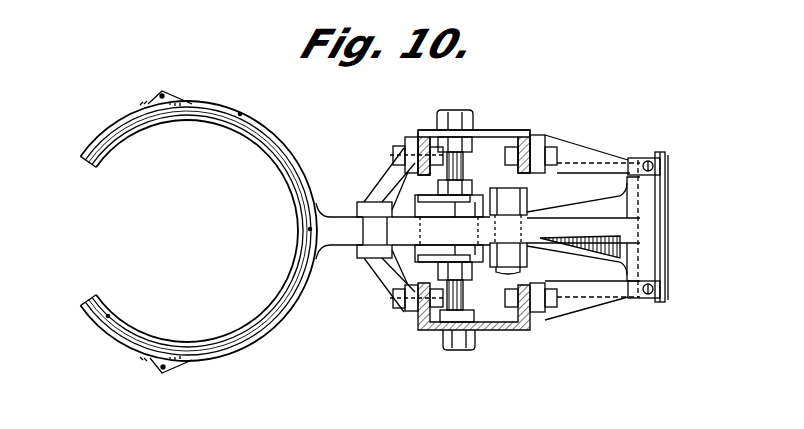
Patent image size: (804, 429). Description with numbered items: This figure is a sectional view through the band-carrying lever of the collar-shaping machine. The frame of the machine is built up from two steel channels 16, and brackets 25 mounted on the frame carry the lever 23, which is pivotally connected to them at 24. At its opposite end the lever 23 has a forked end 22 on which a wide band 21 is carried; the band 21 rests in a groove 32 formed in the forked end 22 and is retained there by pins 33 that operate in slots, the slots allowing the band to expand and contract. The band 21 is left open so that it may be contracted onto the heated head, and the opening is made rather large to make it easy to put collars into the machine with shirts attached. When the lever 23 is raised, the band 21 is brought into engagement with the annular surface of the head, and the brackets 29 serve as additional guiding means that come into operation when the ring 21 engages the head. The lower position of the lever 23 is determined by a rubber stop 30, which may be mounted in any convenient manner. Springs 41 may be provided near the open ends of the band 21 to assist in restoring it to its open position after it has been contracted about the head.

The steel channels 16 is at (498, 130).
The band 21 is at (91, 171).
The forked end 22 is at (308, 160).
The lever 23 is at (665, 210).
The pivotal connection 24 is at (647, 158).
The brackets 25 is at (584, 155).
The brackets 29 is at (382, 184).
The rubber stop 30 is at (470, 202).
The groove 32 is at (214, 118).
The pins 33 is at (240, 114).
The springs 41 is at (138, 100).